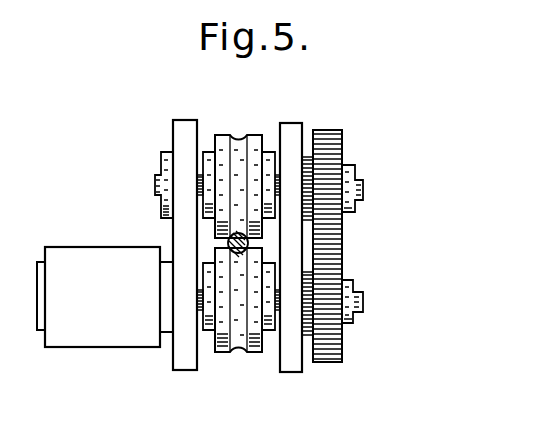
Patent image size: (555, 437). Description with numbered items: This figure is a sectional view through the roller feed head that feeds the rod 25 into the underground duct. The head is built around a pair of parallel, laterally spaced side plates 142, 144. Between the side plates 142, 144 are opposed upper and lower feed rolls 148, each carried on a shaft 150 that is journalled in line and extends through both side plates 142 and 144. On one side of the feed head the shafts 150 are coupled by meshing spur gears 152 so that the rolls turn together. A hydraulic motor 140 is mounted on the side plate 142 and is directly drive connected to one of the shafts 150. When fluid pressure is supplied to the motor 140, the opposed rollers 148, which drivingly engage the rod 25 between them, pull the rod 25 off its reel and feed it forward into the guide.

The rod 25 is at (228, 244).
The hydraulic motor 140 is at (122, 307).
The side plate 142 is at (185, 125).
The side plate 144 is at (293, 133).
The feed roll 148 is at (250, 135).
The shaft 150 is at (155, 185).
The spur gear 152 is at (342, 138).